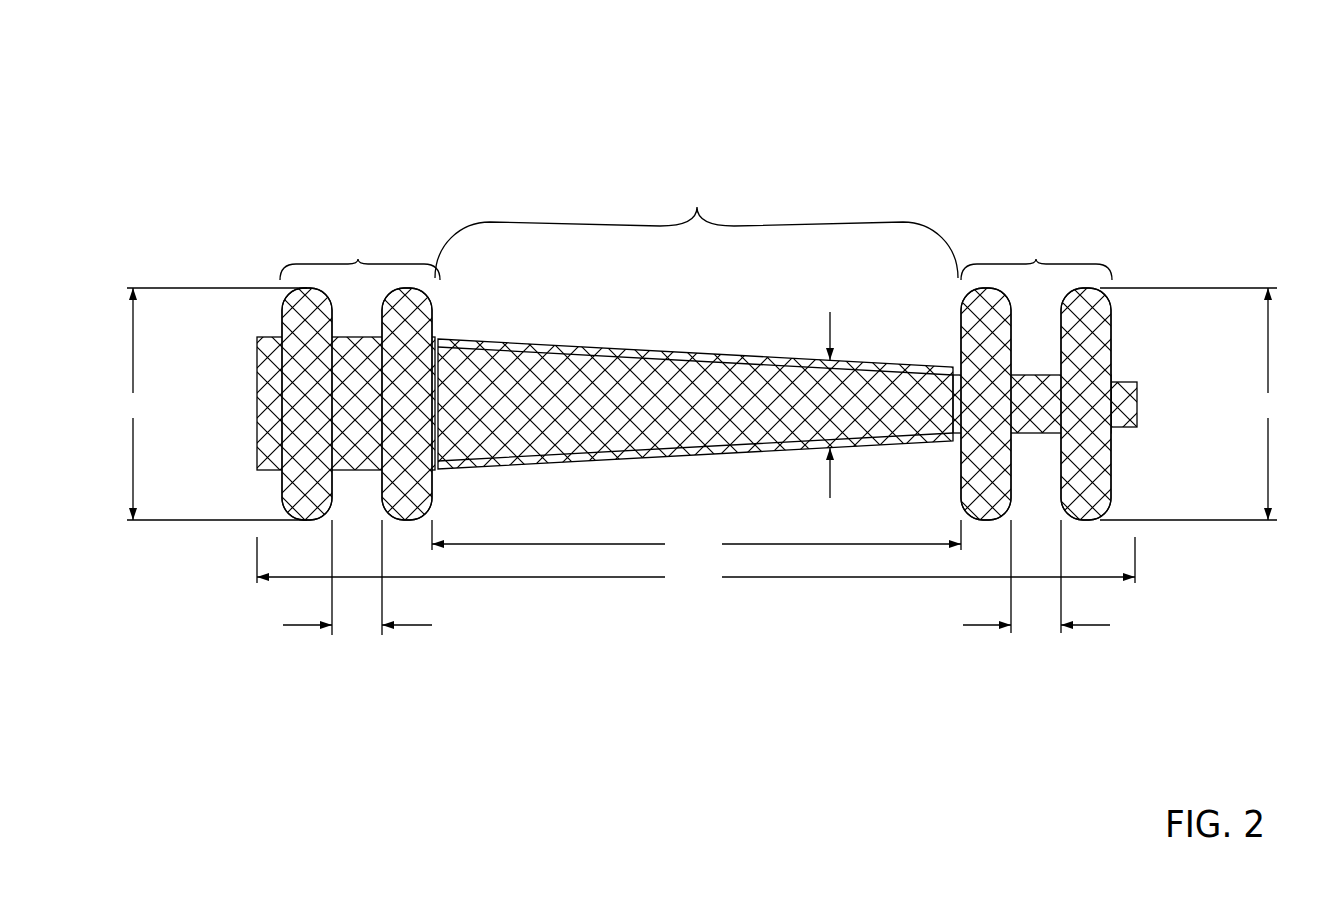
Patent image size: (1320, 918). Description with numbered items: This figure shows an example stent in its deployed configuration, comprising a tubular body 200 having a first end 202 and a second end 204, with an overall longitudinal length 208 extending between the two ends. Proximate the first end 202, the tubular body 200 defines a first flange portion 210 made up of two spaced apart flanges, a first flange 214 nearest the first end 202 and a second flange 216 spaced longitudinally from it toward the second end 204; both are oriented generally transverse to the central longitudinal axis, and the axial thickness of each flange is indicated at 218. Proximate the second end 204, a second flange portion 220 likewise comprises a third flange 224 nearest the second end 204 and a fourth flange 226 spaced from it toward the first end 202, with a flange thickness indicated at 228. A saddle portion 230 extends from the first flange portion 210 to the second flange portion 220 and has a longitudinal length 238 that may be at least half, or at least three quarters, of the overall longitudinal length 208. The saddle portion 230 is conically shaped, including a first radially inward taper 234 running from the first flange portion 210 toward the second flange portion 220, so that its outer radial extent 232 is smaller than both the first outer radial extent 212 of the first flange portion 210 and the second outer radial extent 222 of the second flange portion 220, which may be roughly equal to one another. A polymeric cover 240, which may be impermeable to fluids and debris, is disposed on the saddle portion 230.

The tubular body 200 is at (1078, 92).
The first end 202 is at (255, 475).
The second end 204 is at (1140, 430).
The overall longitudinal length 208 is at (696, 564).
The first flange portion 210 is at (360, 256).
The first outer radial extent 212 is at (210, 404).
The first flange 214 is at (307, 525).
The second flange 216 is at (403, 527).
The washer thickness 218 is at (337, 579).
The second flange portion 220 is at (1036, 256).
The second outer radial extent 222 is at (1195, 404).
The third flange 224 is at (1083, 527).
The fourth flange 226 is at (983, 527).
The washer thickness 228 is at (1057, 579).
The saddle portion 230 is at (696, 230).
The outer radial extent 232 is at (831, 394).
The first radially inward taper 234 is at (592, 338).
The longitudinal length 238 is at (696, 539).
The polymeric cover 240 is at (685, 352).